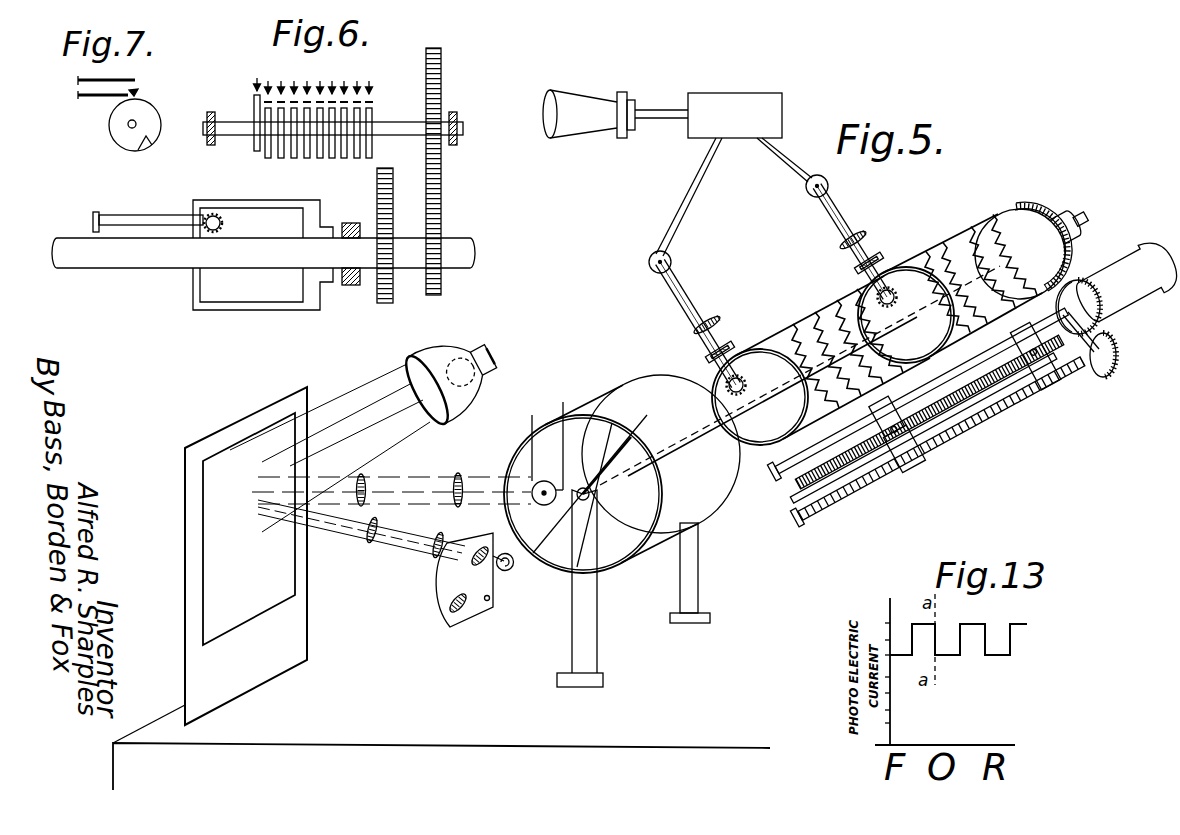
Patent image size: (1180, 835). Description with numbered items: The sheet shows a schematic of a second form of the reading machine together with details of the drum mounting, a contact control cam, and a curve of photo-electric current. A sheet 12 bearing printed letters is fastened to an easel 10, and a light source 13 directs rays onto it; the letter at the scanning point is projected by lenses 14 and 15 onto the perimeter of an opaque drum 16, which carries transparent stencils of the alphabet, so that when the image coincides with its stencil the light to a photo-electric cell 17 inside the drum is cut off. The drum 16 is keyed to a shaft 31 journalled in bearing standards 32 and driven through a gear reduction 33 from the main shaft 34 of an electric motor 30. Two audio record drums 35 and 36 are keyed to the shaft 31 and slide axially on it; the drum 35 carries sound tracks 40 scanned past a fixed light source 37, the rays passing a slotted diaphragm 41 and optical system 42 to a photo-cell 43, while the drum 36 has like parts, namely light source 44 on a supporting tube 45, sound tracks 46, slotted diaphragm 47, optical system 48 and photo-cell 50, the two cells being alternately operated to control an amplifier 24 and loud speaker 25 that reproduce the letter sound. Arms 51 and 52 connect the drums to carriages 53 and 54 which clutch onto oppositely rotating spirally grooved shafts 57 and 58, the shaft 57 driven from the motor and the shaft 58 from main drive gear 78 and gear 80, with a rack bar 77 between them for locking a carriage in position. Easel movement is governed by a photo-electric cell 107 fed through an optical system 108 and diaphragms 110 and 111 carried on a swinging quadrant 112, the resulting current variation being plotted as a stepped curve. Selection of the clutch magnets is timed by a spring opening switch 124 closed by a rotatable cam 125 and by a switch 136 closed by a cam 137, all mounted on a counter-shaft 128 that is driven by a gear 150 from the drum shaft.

In FIG. 5, the easel 10 is at (282, 656).
In FIG. 5, the sheet 12 is at (248, 584).
In FIG. 5, the light source 13 is at (424, 360).
In FIG. 5, the lens 14 is at (367, 478).
In FIG. 5, the lens 15 is at (462, 476).
In FIG. 5, the drum 16 is at (626, 394).
In FIG. 5, the photo-electric cell 17 is at (548, 480).
In FIG. 5, the amplifier 24 is at (732, 102).
In FIG. 5, the loud speaker 25 is at (612, 126).
In FIG. 5, the electric motor 30 is at (1125, 282).
In FIG. 6, the shaft 31 is at (147, 256).
In FIG. 5, the shaft 31 is at (753, 443).
In FIG. 5, the bearing standards 32 is at (683, 580).
In FIG. 6, the gear reduction 33 is at (381, 285).
In FIG. 5, the gear reduction 33 is at (1030, 210).
In FIG. 5, the main shaft 34 is at (1078, 300).
In FIG. 5, the audio record drum 35 is at (750, 355).
In FIG. 6, the audio record drum 36 is at (262, 293).
In FIG. 5, the audio record drum 36 is at (904, 268).
In FIG. 5, the light source 37 is at (746, 385).
In FIG. 5, the sound tracks 40 is at (806, 330).
In FIG. 5, the slotted diaphragm 41 is at (706, 351).
In FIG. 5, the optical system 42 is at (702, 324).
In FIG. 5, the photo-cell 43 is at (649, 265).
In FIG. 6, the light source 44 is at (222, 225).
In FIG. 5, the light source 44 is at (897, 297).
In FIG. 6, the supporting tube 45 is at (140, 222).
In FIG. 5, the sound tracks 46 is at (983, 240).
In FIG. 5, the slotted diaphragm 47 is at (880, 252).
In FIG. 5, the optical system 48 is at (862, 228).
In FIG. 5, the photo-cell 50 is at (806, 191).
In FIG. 5, the arm 51 is at (926, 362).
In FIG. 5, the arm 52 is at (1005, 313).
In FIG. 5, the carriage 53 is at (893, 455).
In FIG. 5, the carriage 54 is at (1034, 398).
In FIG. 5, the spirally grooved shaft 57 is at (784, 482).
In FIG. 5, the spirally grooved shaft 58 is at (973, 420).
In FIG. 5, the rack bar 77 is at (940, 414).
In FIG. 5, the main drive gear 78 is at (1103, 376).
In FIG. 5, the gear 80 is at (1115, 362).
In FIG. 5, the photo-electric cell 107 is at (512, 573).
In FIG. 5, the optical system 108 is at (440, 540).
In FIG. 5, the diaphragm 110 is at (440, 594).
In FIG. 5, the diaphragm 111 is at (447, 597).
In FIG. 5, the quadrant 112 is at (477, 607).
In FIG. 7, the spring opening switch 124 is at (137, 91).
In FIG. 7, the rotatable cam 125 is at (141, 141).
In FIG. 6, the rotatable cam 125 is at (253, 143).
In FIG. 7, the counter-shaft 128 is at (128, 127).
In FIG. 6, the counter-shaft 128 is at (408, 130).
In FIG. 6, the spring opening switch 136 is at (375, 92).
In FIG. 6, the rotatable cam 137 is at (373, 116).
In FIG. 6, the gear 150 is at (441, 226).